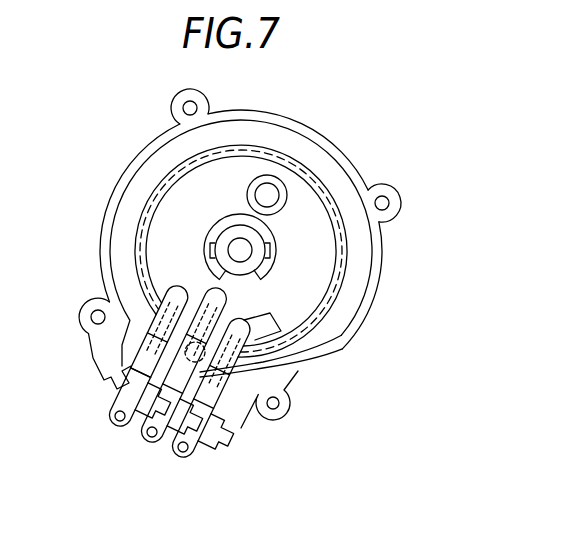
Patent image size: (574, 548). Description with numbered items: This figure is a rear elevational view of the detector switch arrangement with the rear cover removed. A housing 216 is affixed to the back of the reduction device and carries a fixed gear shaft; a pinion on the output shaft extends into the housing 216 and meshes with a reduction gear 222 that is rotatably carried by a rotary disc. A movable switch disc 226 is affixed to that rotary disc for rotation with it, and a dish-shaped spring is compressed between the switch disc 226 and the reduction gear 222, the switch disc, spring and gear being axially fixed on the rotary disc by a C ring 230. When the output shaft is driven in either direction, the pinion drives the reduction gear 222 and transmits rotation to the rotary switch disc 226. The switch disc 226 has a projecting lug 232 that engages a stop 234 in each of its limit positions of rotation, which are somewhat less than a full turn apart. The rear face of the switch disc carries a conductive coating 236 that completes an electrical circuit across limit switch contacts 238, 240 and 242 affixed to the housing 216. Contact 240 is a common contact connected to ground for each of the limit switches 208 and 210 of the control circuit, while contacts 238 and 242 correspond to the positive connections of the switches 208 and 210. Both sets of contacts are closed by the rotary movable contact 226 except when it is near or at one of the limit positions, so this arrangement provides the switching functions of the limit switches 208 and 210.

The limit switch 208 is at (112, 444).
The limit switch 210 is at (172, 462).
The housing 216 is at (323, 140).
The reduction gear 222 is at (315, 177).
The movable switch disc 226 is at (305, 323).
The C ring 230 is at (277, 249).
The projecting lug 232 is at (312, 363).
The stop 234 is at (176, 445).
The conductive coating 236 is at (310, 297).
The limit switch contact 238 is at (187, 462).
The limit switch contact 240 is at (148, 440).
The limit switch contact 242 is at (116, 414).